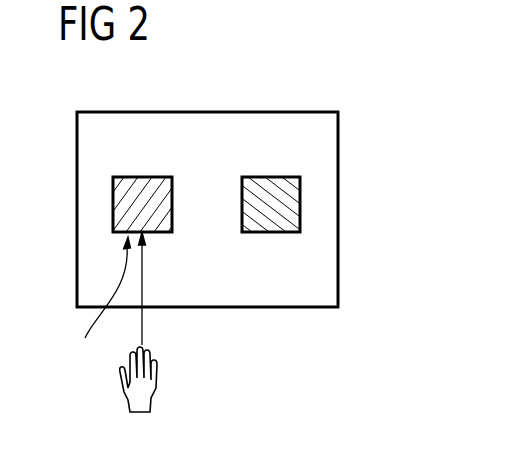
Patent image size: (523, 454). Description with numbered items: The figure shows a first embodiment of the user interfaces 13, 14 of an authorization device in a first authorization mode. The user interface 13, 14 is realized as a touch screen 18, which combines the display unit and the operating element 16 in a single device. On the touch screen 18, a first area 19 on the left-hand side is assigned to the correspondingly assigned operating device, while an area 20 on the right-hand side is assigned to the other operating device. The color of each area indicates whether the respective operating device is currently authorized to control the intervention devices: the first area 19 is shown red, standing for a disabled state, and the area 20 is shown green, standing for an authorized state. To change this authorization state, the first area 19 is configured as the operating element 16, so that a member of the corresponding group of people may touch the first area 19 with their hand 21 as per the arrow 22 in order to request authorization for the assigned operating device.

The first user interface 13 is at (322, 86).
The second user interface 14 is at (207, 209).
The operating element 16 is at (101, 308).
The touch screen 18 is at (338, 203).
The first area 19 is at (145, 177).
The area 20 is at (270, 177).
The hand 21 is at (157, 387).
The arrow 22 is at (142, 285).